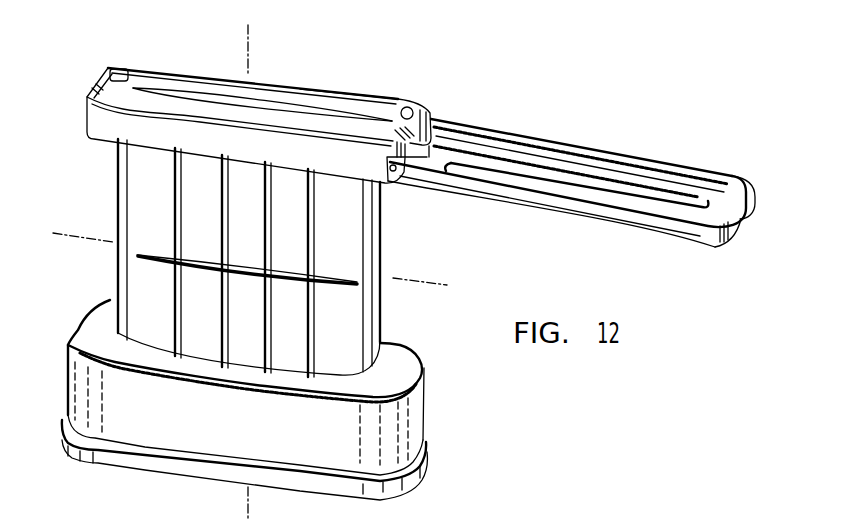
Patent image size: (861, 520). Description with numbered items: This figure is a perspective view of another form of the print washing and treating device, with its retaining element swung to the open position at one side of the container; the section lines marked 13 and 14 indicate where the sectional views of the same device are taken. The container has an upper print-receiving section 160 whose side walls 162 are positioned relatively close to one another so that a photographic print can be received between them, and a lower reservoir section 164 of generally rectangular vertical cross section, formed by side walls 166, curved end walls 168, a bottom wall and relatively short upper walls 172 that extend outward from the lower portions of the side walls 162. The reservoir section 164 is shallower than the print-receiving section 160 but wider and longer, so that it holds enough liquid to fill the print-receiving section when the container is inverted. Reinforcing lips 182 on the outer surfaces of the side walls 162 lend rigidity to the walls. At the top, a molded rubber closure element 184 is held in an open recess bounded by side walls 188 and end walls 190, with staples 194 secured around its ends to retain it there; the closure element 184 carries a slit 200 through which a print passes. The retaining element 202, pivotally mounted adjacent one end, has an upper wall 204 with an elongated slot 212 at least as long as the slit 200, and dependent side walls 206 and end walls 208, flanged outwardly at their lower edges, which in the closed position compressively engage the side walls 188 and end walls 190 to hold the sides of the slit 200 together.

The section line 13- 13 is at (248, 33).
The section line 14- 14 is at (56, 235).
The upper print-receiving section 160 is at (148, 238).
The side walls 162 is at (302, 333).
The lower reservoir section 164 is at (432, 421).
The side walls 166 is at (241, 432).
The curved end walls 168 is at (68, 380).
The upper walls 172 is at (364, 393).
The reinforcing lips 182 is at (316, 242).
The closure element 184 is at (387, 99).
The side walls 188 is at (315, 86).
The end walls 190 is at (95, 83).
The staples 194 is at (123, 80).
The slit 200 is at (263, 102).
The retaining element 202 is at (573, 140).
The upper wall 204 is at (720, 202).
The side walls 206 is at (617, 168).
The end walls 208 is at (735, 228).
The elongated slot 212 is at (493, 167).